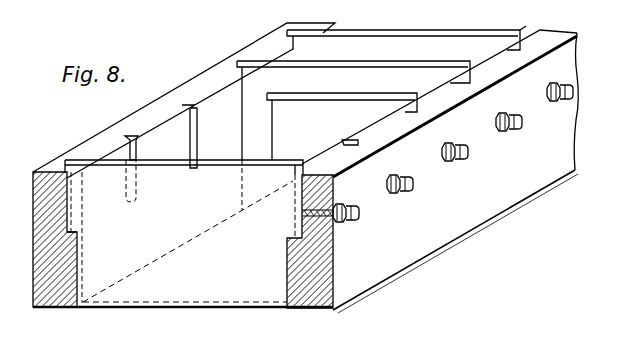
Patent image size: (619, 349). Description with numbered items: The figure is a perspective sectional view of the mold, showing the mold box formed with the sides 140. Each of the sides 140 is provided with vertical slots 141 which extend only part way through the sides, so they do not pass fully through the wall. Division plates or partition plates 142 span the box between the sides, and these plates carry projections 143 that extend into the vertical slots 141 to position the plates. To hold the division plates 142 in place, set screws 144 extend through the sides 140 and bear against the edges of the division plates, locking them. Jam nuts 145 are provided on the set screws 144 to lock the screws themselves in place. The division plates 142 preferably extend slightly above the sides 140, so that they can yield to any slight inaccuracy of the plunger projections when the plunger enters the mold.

The sides 140 is at (107, 137).
The vertical slots 141 is at (196, 128).
The division plates 142 is at (188, 241).
The projections 143 is at (78, 224).
The set screws 144 is at (333, 200).
The jam nuts 145 is at (338, 224).